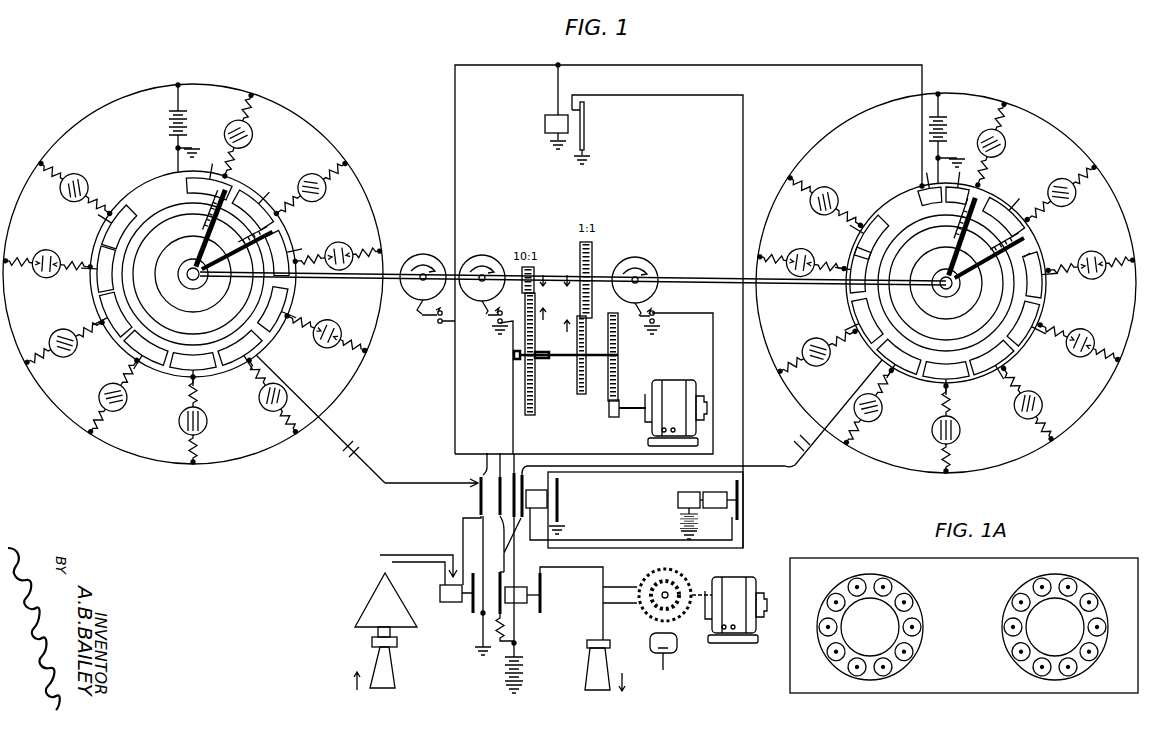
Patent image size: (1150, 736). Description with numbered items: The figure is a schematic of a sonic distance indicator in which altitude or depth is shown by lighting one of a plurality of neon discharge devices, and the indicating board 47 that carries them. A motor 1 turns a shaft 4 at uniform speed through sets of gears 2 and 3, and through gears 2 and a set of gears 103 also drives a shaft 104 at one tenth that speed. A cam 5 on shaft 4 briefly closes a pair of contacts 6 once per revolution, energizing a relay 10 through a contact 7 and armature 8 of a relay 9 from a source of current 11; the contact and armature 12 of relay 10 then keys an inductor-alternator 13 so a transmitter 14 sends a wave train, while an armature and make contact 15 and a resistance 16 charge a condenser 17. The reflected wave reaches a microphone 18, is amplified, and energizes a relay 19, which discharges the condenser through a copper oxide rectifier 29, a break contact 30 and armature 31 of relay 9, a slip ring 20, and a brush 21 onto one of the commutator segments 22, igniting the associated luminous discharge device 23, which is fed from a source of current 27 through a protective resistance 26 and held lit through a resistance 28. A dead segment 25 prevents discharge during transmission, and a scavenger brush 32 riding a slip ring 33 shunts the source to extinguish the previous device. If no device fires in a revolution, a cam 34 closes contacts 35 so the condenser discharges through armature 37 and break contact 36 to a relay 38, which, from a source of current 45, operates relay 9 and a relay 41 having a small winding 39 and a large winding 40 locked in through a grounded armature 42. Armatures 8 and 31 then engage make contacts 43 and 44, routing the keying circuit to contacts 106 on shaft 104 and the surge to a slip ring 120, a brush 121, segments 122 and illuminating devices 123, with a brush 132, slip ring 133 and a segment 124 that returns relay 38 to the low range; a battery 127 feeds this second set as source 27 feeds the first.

In FIG. 1, the motor 1 is at (730, 582).
In FIG. 1, the set of gears 2 is at (608, 388).
In FIG. 1, the set of gears 3 is at (524, 294).
In FIG. 1, the shaft 4 is at (446, 266).
In FIG. 1, the cam 5 is at (484, 258).
In FIG. 1, the pair of contacts 6 is at (478, 315).
In FIG. 1, the contact 7 is at (521, 539).
In FIG. 1, the armature 8 is at (512, 545).
In FIG. 1, the relay 9 is at (535, 490).
In FIG. 1, the relay 10 is at (544, 596).
In FIG. 1, the source of current 11 is at (520, 670).
In FIG. 1, the contact and armature 12 is at (532, 568).
In FIG. 1, the inductor-alternator 13 is at (673, 581).
In FIG. 1, the transmitter 14 is at (591, 690).
In FIG. 1, the armature and make contact 15 is at (503, 556).
In FIG. 1, the resistance 16 is at (504, 632).
In FIG. 1, the condenser 17 is at (478, 647).
In FIG. 1, the microphone 18 is at (375, 688).
In FIG. 1, the relay 19 is at (440, 593).
In FIG. 1, the slip ring 20 is at (193, 274).
In FIG. 1, the brush 21 is at (193, 274).
In FIG. 1, the commutator segments 22 is at (193, 273).
In FIG. 1, the luminous discharge device 23 is at (192, 276).
In FIG. 1A, the luminous discharge device 23 is at (883, 579).
In FIG. 1, the dead segment 25 is at (193, 268).
In FIG. 1, the protective resistance 26 is at (192, 278).
In FIG. 1, the source of current 27 is at (185, 127).
In FIG. 1, the resistance 28 is at (210, 273).
In FIG. 1, the copper oxide rectifier 29 is at (352, 446).
In FIG. 1, the break contact 30 is at (476, 476).
In FIG. 1, the armature 31 is at (478, 497).
In FIG. 1, the scavenger brush 32 is at (244, 215).
In FIG. 1, the slip ring 33 is at (206, 285).
In FIG. 1, the cam 34 is at (422, 260).
In FIG. 1, the pair of contacts 35 is at (422, 314).
In FIG. 1, the break contact 36 is at (492, 447).
In FIG. 1, the armature 37 is at (483, 550).
In FIG. 1, the relay 38 is at (545, 125).
In FIG. 1, the small winding 39 is at (678, 500).
In FIG. 1, the large winding 40 is at (738, 500).
In FIG. 1, the relay 41 is at (709, 495).
In FIG. 1, the grounded armature 42 is at (558, 500).
In FIG. 1, the make contact 43 is at (533, 476).
In FIG. 1, the make contact 44 is at (474, 447).
In FIG. 1, the source of current 45 is at (682, 520).
In FIG. 1A, the indicating board 47 is at (914, 561).
In FIG. 1, the set of gears 103 is at (580, 315).
In FIG. 1, the shaft 104 is at (658, 279).
In FIG. 1, the pair of contacts 106 is at (647, 324).
In FIG. 1, the slip ring 120 is at (1052, 250).
In FIG. 1, the brush 121 is at (946, 283).
In FIG. 1, the segments 122 is at (946, 282).
In FIG. 1, the illuminating devices 123 is at (946, 287).
In FIG. 1A, the illuminating devices 123 is at (1068, 579).
In FIG. 1, the segment 124 is at (946, 279).
In FIG. 1, the battery 127 is at (947, 137).
In FIG. 1, the brush 132 is at (1014, 237).
In FIG. 1, the slip ring 133 is at (946, 283).